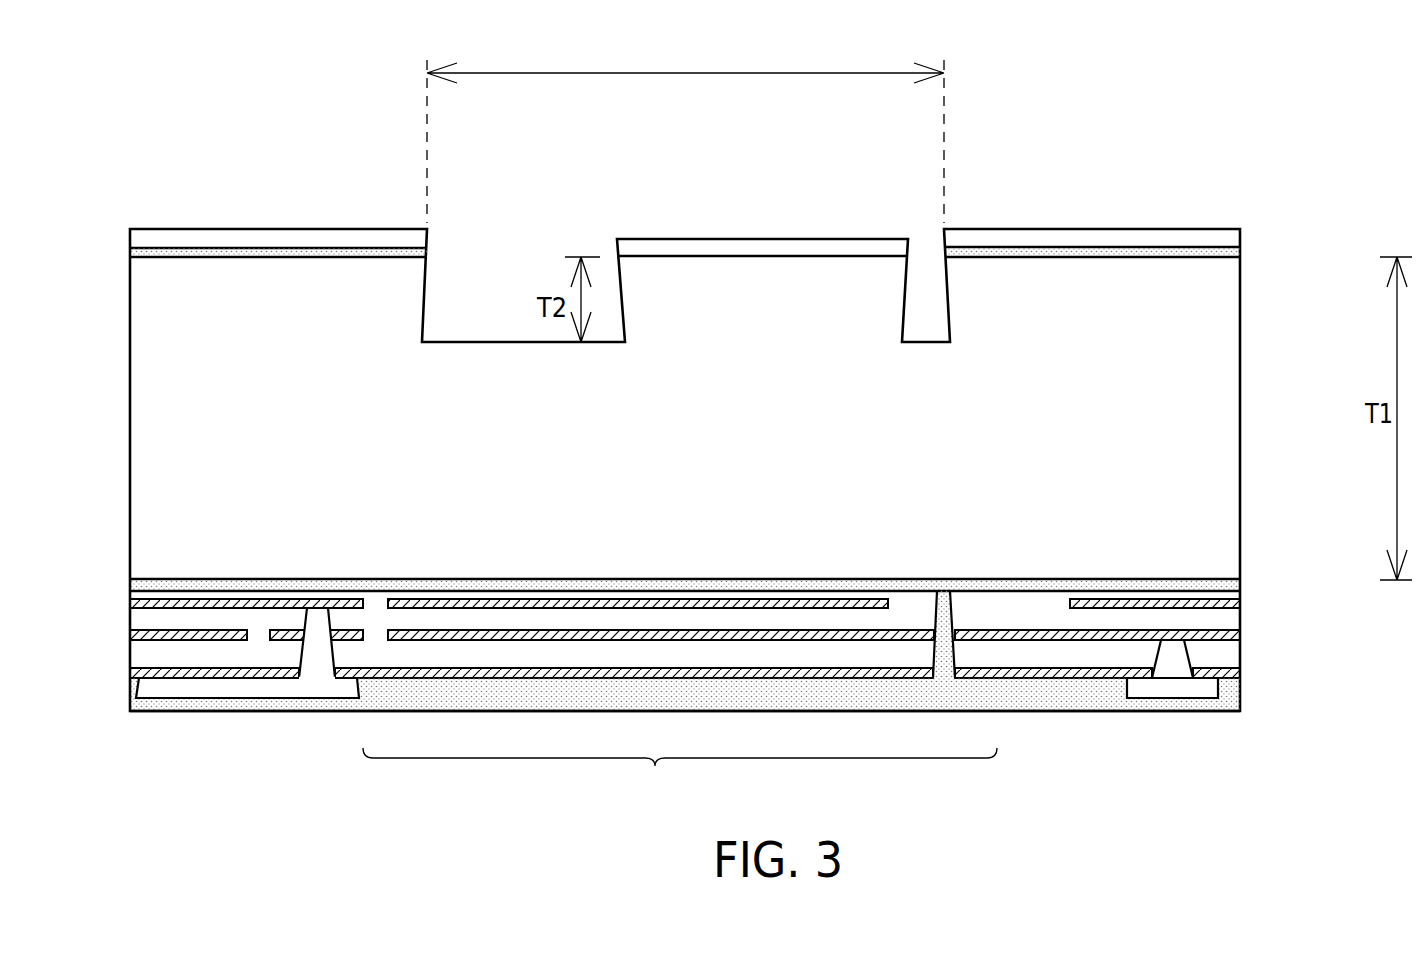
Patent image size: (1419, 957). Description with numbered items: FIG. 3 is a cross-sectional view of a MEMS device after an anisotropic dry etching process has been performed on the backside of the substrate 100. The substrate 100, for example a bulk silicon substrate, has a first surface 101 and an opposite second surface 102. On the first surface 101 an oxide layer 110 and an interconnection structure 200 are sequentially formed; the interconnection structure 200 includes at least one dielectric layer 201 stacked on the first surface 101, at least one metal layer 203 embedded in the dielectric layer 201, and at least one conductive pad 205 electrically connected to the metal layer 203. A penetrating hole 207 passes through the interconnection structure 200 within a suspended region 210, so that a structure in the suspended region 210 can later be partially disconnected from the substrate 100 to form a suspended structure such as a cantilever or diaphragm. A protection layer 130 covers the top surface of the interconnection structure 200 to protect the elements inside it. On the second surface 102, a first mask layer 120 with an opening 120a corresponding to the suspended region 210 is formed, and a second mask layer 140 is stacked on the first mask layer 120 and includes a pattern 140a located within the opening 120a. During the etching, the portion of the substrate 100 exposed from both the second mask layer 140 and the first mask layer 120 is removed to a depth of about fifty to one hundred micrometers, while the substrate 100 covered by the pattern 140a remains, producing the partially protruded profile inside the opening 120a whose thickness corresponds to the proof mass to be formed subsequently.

The substrate 100 is at (1136, 513).
The first surface 101 is at (1192, 578).
The second surface 102 is at (183, 255).
The oxide layer 110 is at (130, 585).
The first mask layer 120 is at (1232, 252).
The opening 120a is at (685, 132).
The protection layer 130 is at (134, 702).
The second mask layer 140 is at (1232, 237).
The pattern 140a is at (750, 252).
The interconnection structure 200 is at (719, 678).
The dielectric layer 201 is at (138, 650).
The metal layer 203 is at (134, 672).
The conductive pad 205 is at (319, 673).
The penetrating hole 207 is at (943, 665).
The suspended region 210 is at (680, 775).